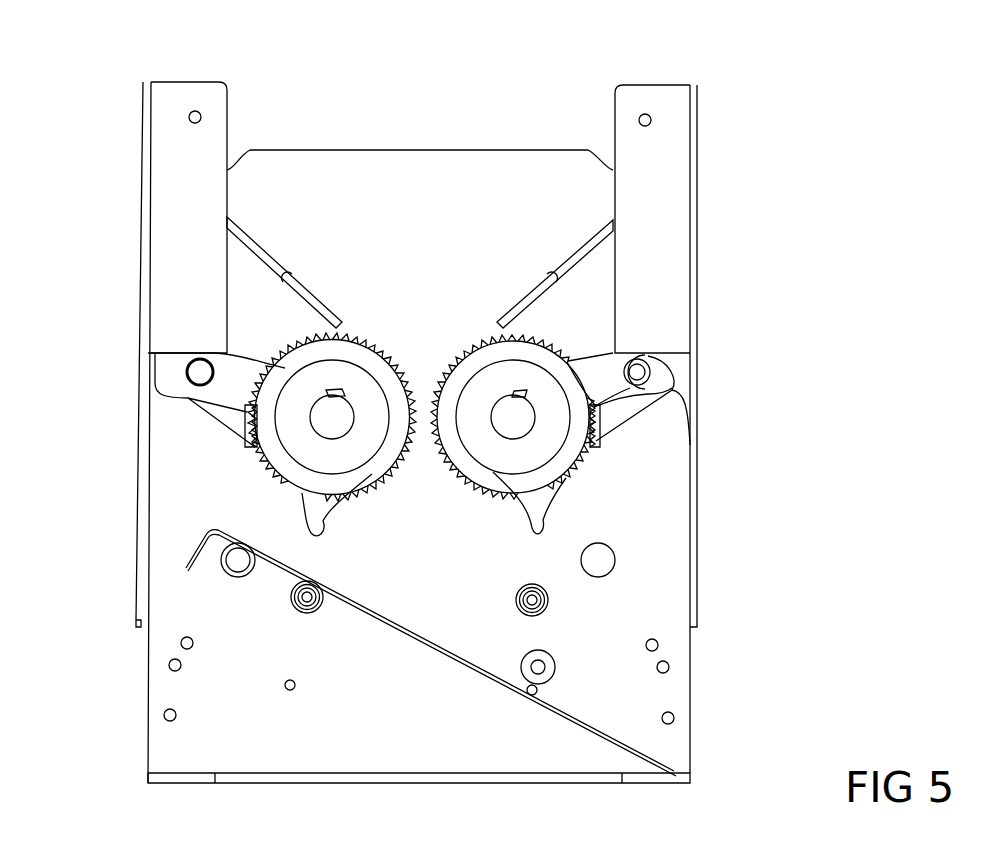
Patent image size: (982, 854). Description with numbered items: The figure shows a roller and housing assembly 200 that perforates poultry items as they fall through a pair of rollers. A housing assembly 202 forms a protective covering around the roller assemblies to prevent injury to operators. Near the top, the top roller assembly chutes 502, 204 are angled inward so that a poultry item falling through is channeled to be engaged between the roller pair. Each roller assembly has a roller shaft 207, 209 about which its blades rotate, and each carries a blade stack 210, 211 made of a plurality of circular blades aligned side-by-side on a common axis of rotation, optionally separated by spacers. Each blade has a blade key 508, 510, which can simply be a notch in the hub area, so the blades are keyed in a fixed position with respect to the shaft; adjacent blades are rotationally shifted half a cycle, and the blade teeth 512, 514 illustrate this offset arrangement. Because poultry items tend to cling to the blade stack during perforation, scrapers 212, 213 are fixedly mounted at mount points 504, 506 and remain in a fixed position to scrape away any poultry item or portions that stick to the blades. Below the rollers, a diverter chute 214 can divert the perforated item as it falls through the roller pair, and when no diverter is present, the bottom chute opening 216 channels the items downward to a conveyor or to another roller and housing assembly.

The roller and housing assembly 200 is at (753, 62).
The housing assembly 202 is at (700, 233).
The top roller assembly chute 204 is at (568, 255).
The roller shaft 207 is at (513, 417).
The roller shaft 209 is at (323, 417).
The blade stack 210 is at (470, 340).
The blade stack 211 is at (330, 333).
The scraper 212 is at (305, 519).
The scraper 213 is at (540, 513).
The diverter chute 214 is at (580, 705).
The bottom chute opening 216 is at (316, 798).
The top roller assembly chute 502 is at (258, 238).
The mount point 504 is at (522, 392).
The mount point 506 is at (190, 372).
The blade key 508 is at (330, 392).
The blade key 510 is at (637, 372).
The blade teeth 512 is at (540, 328).
The blade teeth 514 is at (530, 342).